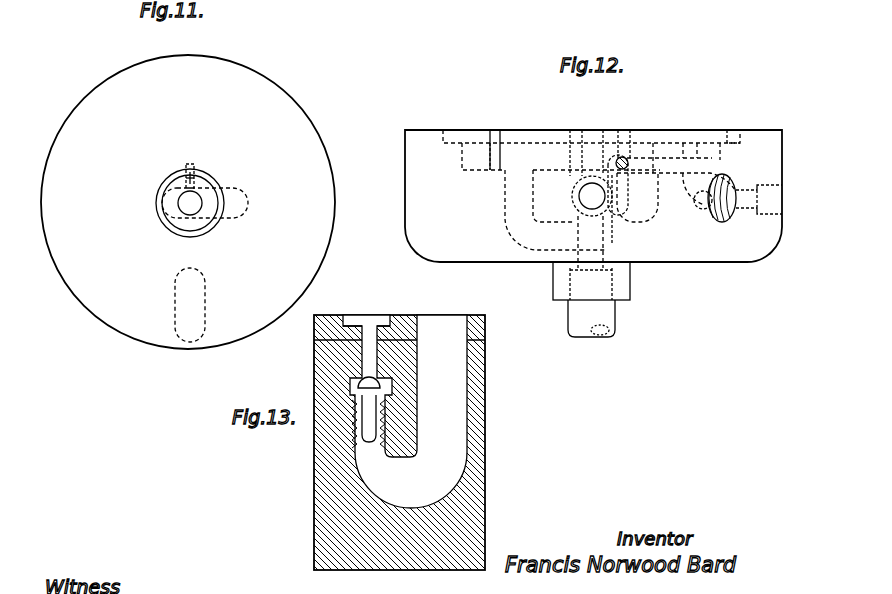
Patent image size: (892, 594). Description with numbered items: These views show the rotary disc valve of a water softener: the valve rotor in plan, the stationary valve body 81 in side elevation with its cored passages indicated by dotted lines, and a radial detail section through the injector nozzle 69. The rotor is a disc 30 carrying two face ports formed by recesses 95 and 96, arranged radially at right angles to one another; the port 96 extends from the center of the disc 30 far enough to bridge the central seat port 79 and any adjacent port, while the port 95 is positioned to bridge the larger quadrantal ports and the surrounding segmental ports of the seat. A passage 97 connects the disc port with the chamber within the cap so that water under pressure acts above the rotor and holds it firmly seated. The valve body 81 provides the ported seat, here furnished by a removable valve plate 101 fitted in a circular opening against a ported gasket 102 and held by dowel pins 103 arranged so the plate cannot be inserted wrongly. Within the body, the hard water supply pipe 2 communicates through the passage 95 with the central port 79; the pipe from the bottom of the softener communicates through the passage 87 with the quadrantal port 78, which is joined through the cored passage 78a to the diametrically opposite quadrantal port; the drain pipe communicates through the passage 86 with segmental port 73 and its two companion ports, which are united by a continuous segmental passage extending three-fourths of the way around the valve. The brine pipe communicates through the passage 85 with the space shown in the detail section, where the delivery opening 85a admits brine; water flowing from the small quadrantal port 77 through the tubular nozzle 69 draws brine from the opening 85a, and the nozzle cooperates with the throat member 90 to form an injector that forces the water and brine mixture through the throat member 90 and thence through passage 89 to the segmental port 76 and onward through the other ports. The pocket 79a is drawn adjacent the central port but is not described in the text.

In FIG. 11, the disk valve member 30 is at (80, 108).
In FIG. 11, the passage 97 is at (200, 171).
In FIG. 11, the disc port 96 is at (247, 194).
In FIG. 11, the disc port 95 is at (207, 288).
In FIG. 12, the disc port 95 is at (612, 238).
In FIG. 12, the valve body 81 is at (766, 137).
In FIG. 13, the valve body 81 is at (486, 492).
In FIG. 12, the segmental port 73 is at (466, 140).
In FIG. 12, the quadrantal port 78 is at (500, 142).
In FIG. 12, the cored passage 78a is at (512, 233).
In FIG. 12, the central port 79 is at (580, 134).
In FIG. 12, the pocket 79a is at (576, 188).
In FIG. 12, the throat member 90 is at (603, 134).
In FIG. 13, the throat member 90 is at (354, 405).
In FIG. 12, the injector nozzle 69 is at (624, 160).
In FIG. 13, the injector nozzle 69 is at (362, 366).
In FIG. 12, the valve plate 101 is at (665, 137).
In FIG. 12, the gasket 102 is at (736, 137).
In FIG. 12, the dowel pins 103 is at (490, 155).
In FIG. 12, the passage 87 is at (580, 208).
In FIG. 12, the passage 89 is at (655, 222).
In FIG. 13, the passage 89 is at (440, 410).
In FIG. 12, the passage 86 is at (716, 222).
In FIG. 12, the passage 85 is at (745, 210).
In FIG. 13, the delivery opening 85a is at (381, 390).
In FIG. 12, the hard water supply pipe 2 is at (612, 319).
In FIG. 13, the small quadrantal port 77 is at (369, 316).
In FIG. 13, the segmental port 76 is at (446, 320).